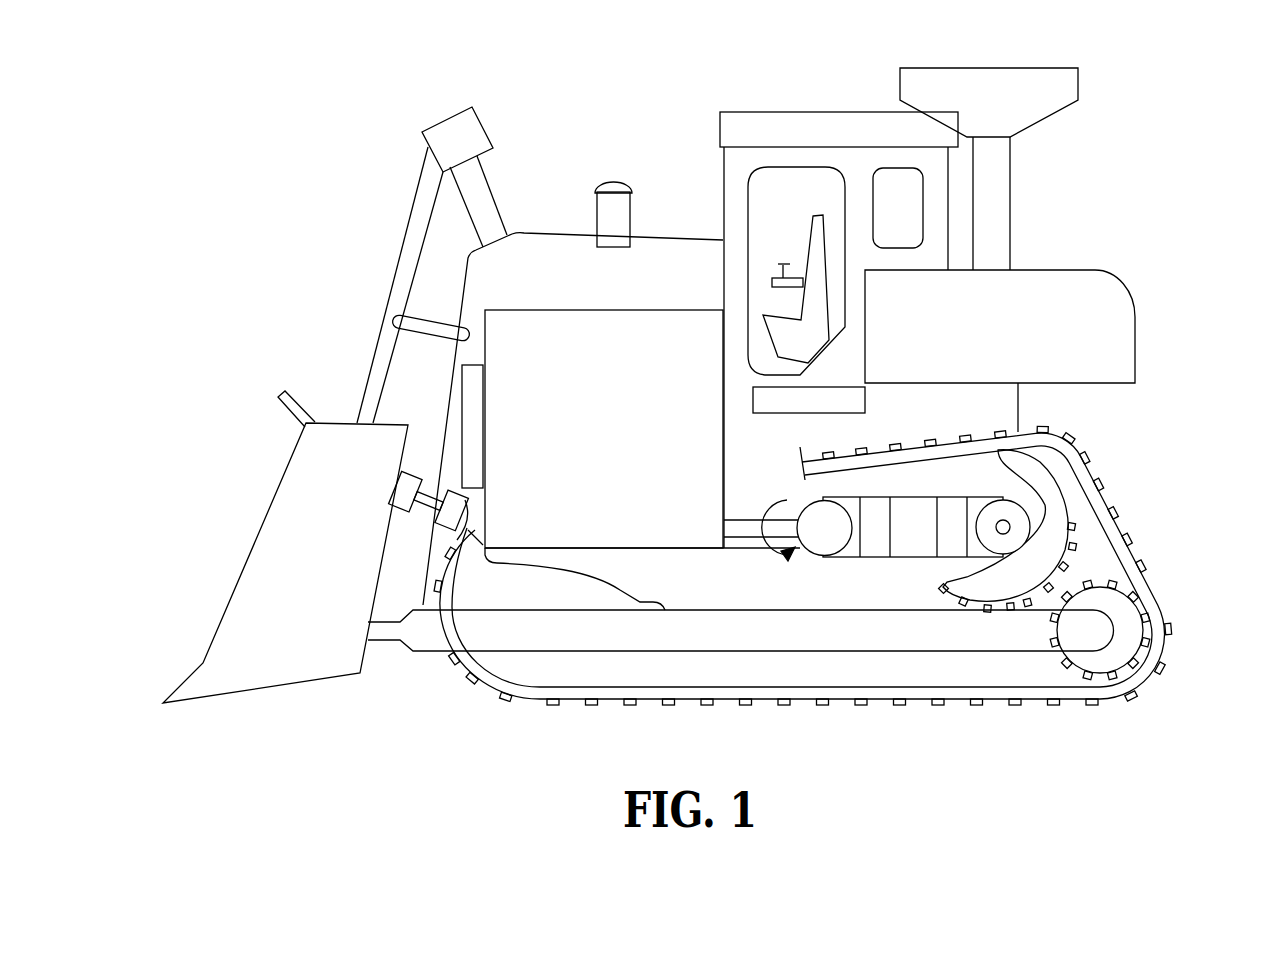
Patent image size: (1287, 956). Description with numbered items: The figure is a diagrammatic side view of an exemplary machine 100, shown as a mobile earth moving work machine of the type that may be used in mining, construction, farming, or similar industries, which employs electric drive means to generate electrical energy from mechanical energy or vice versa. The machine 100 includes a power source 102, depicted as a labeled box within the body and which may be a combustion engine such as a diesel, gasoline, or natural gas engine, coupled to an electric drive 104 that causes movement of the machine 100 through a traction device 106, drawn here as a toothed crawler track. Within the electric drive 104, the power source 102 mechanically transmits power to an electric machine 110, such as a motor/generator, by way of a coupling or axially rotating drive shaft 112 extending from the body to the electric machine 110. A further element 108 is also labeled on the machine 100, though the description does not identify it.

The machine 100 is at (703, 438).
The power source 102 is at (580, 475).
The electric drive 104 is at (906, 594).
The traction device 106 is at (1127, 520).
The controller 108 is at (470, 415).
The electric machine 110 is at (833, 528).
The drive shaft 112 is at (745, 542).